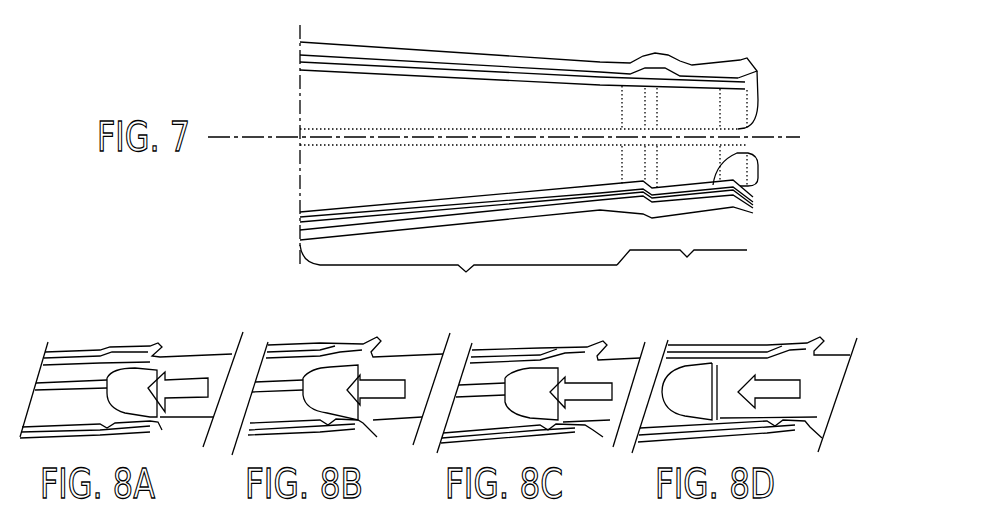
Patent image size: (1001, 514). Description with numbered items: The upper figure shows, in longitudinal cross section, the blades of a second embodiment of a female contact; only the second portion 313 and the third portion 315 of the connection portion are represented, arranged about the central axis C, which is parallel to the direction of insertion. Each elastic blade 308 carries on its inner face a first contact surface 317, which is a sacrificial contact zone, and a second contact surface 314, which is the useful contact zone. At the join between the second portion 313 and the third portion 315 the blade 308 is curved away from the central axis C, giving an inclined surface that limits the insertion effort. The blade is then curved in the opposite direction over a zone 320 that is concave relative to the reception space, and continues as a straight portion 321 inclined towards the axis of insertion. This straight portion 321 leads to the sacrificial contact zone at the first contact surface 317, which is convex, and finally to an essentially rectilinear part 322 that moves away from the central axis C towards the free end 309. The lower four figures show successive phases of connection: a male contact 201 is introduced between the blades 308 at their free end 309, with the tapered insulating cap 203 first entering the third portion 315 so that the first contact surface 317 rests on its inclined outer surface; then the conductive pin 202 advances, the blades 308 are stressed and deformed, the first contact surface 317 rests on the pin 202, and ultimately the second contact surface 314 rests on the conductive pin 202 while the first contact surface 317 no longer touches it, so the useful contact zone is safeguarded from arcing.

In FIG. 7, the elastic blade 308 is at (300, 42).
In FIG. 8A, the elastic blade 308 is at (68, 352).
In FIG. 7, the central axis C is at (242, 137).
In FIG. 7, the second contact surface 314 is at (636, 92).
In FIG. 7, the first contact surface 317 is at (742, 84).
In FIG. 7, the zone 320 is at (654, 188).
In FIG. 7, the straight portion 321 is at (704, 186).
In FIG. 7, the free end 309 is at (758, 203).
In FIG. 7, the rectilinear part 322 is at (739, 213).
In FIG. 7, the second portion 313 is at (458, 274).
In FIG. 7, the third portion 315 is at (682, 268).
In FIG. 8A, the male contact 201 is at (213, 352).
In FIG. 8A, the cap 203 is at (130, 368).
In FIG. 8A, the pin 202 is at (178, 368).